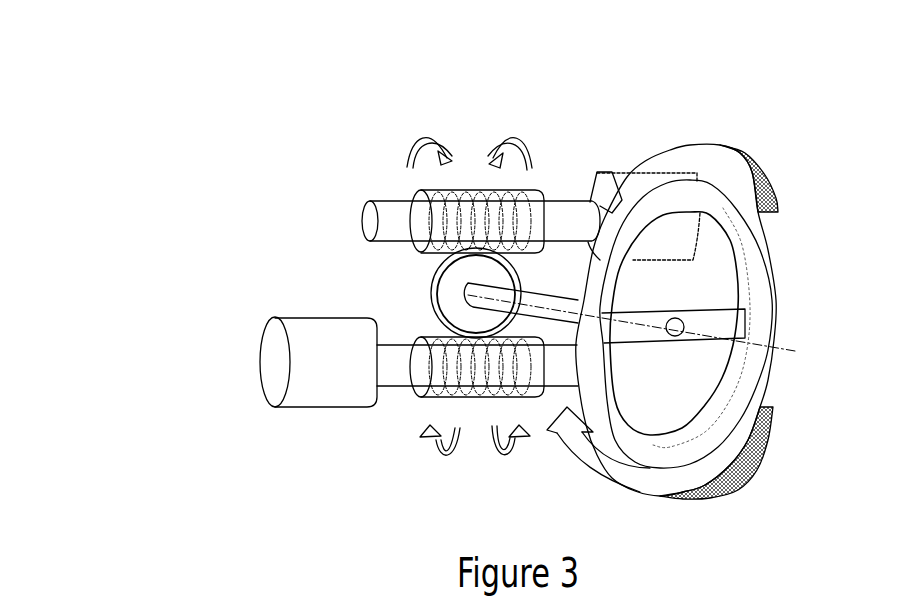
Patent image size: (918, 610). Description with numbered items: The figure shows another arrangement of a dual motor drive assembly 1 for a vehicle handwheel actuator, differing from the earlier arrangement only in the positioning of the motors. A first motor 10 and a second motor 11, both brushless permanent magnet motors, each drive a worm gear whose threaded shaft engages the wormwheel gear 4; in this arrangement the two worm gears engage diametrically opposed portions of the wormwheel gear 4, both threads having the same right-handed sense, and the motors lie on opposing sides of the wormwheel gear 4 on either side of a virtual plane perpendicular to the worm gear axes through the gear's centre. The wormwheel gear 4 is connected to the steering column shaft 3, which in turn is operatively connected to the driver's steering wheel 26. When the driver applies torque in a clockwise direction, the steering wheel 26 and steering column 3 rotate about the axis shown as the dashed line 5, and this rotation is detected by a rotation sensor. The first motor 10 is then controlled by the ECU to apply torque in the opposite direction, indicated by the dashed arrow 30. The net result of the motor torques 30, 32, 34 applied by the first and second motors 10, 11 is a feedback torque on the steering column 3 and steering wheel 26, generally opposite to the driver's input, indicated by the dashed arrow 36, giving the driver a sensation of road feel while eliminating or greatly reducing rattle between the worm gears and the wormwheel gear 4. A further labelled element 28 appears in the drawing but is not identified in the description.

The dual motor drive assembly 1 is at (117, 72).
The steering column shaft 3 is at (542, 301).
The wormwheel gear 4 is at (428, 283).
The dashed line 5 is at (782, 348).
The first motor 10 is at (590, 185).
The second motor 11 is at (300, 393).
The steering wheel 26 is at (730, 397).
The ring side segment 28 is at (722, 493).
The dashed arrow 30 is at (418, 138).
The torque 32 is at (427, 457).
The torque 34 is at (488, 464).
The dashed arrow 36 is at (643, 157).